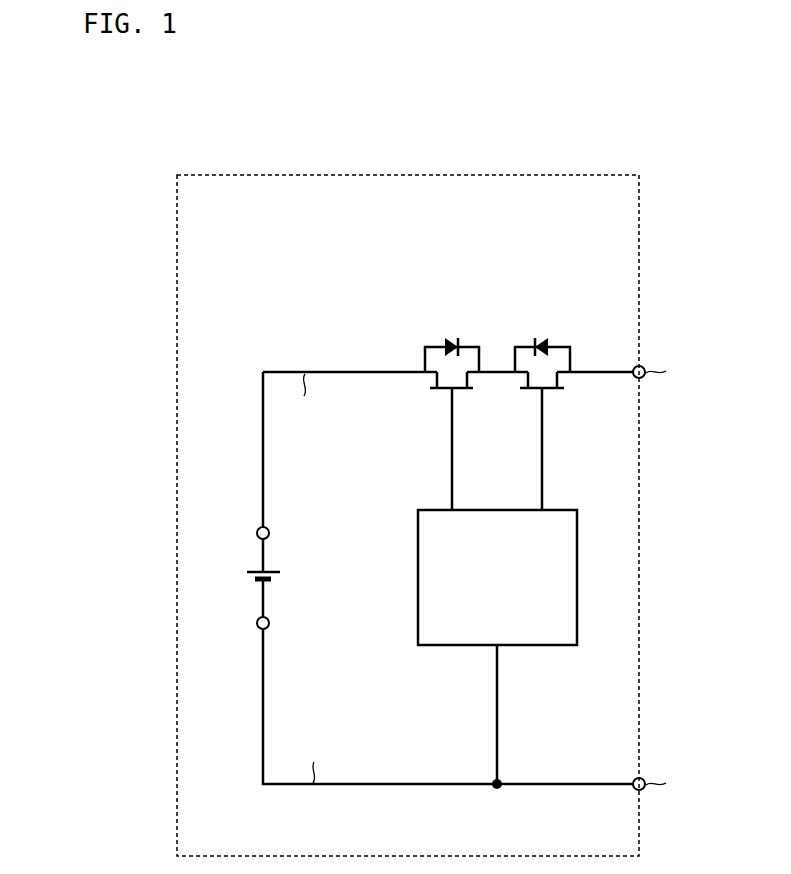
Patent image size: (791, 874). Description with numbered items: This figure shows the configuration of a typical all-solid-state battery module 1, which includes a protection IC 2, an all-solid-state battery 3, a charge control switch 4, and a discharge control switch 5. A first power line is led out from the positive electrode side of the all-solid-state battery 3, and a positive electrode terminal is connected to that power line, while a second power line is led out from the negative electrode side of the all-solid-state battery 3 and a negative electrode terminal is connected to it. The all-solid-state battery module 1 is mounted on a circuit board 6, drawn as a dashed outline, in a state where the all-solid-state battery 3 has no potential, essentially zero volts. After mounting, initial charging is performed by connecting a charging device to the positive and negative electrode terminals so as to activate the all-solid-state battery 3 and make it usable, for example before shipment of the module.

The all-solid-state battery module 1 is at (605, 488).
The protection IC 2 is at (579, 562).
The all-solid-state battery 3 is at (250, 573).
The charge control switch 4 is at (453, 328).
The discharge control switch 5 is at (542, 328).
The circuit board 6 is at (564, 174).